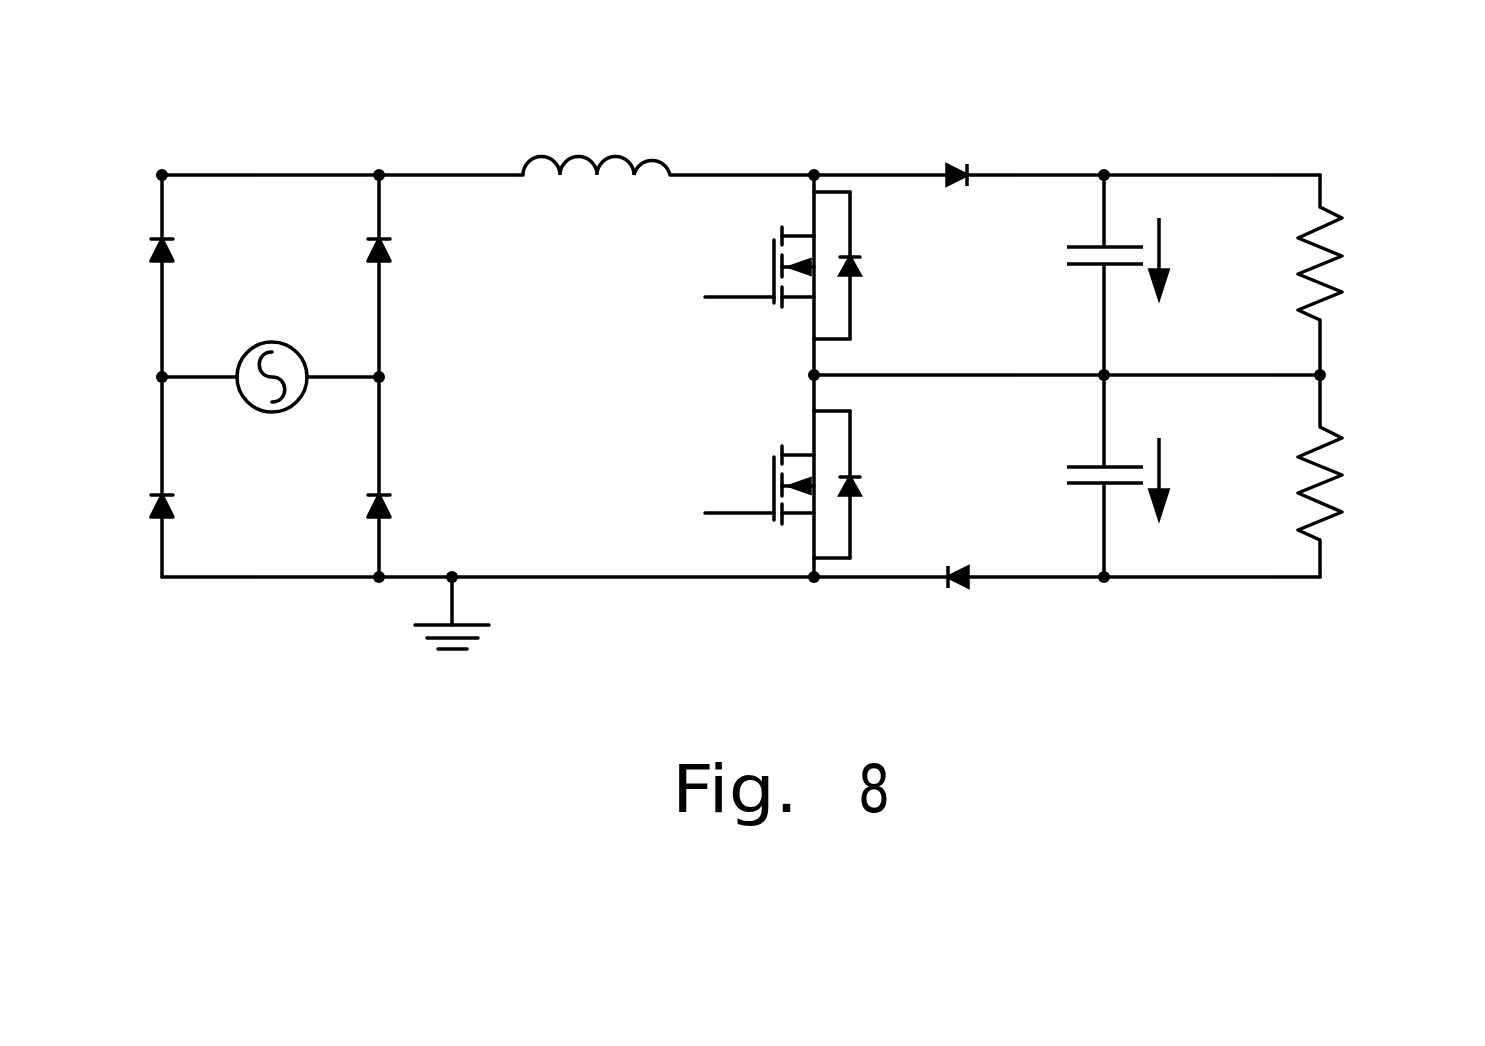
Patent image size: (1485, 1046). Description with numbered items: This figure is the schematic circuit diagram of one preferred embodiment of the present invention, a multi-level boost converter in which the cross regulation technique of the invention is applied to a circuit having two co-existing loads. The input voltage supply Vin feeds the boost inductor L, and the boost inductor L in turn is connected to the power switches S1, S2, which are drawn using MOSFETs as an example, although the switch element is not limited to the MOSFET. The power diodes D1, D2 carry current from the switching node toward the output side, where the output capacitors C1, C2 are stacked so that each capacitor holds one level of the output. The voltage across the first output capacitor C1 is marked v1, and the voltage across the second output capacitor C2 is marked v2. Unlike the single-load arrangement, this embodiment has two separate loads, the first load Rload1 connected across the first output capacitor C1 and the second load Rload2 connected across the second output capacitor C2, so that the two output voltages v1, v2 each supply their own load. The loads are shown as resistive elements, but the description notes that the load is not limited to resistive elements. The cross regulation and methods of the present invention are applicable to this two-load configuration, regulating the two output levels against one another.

The input voltage supply Vin is at (272, 404).
The boost inductor L is at (596, 198).
The power switch S1 is at (782, 265).
The power switch S2 is at (782, 484).
The power diode D1 is at (950, 200).
The power diode D2 is at (950, 550).
The output capacitor C1 is at (1073, 265).
The output capacitor C2 is at (1073, 467).
The first output voltage v1 is at (1179, 258).
The second output voltage v2 is at (1178, 478).
The first load resistor Rload1 is at (1369, 263).
The second load resistor Rload2 is at (1369, 483).